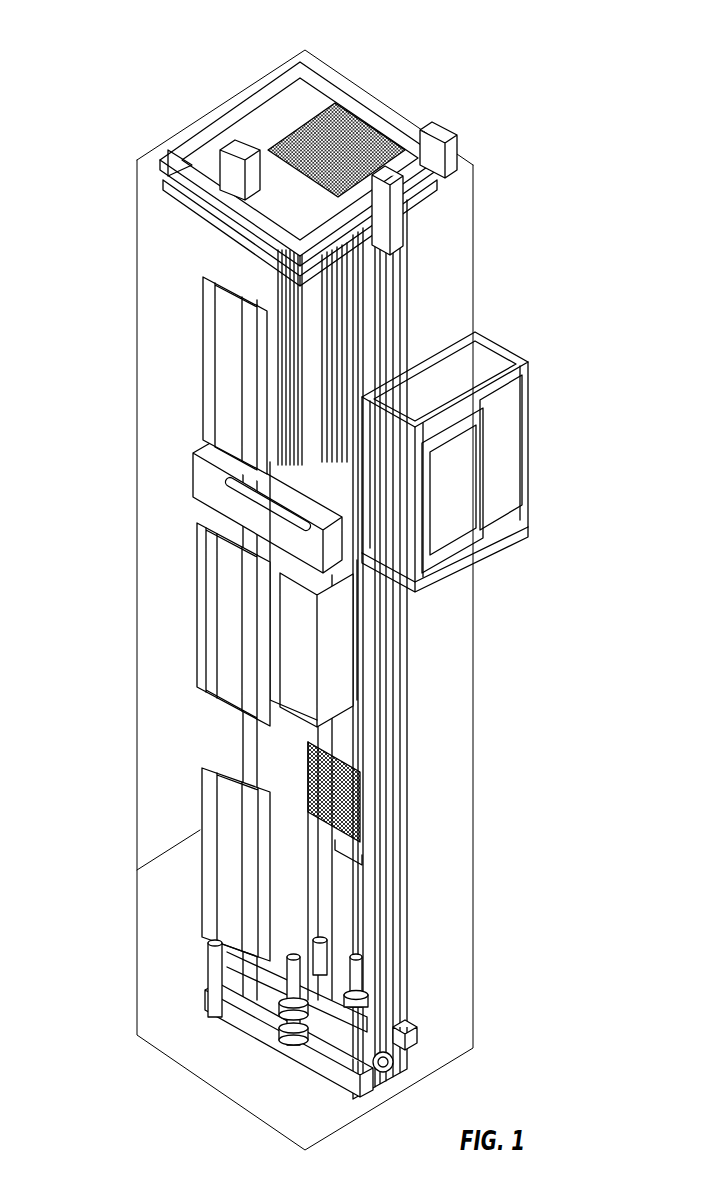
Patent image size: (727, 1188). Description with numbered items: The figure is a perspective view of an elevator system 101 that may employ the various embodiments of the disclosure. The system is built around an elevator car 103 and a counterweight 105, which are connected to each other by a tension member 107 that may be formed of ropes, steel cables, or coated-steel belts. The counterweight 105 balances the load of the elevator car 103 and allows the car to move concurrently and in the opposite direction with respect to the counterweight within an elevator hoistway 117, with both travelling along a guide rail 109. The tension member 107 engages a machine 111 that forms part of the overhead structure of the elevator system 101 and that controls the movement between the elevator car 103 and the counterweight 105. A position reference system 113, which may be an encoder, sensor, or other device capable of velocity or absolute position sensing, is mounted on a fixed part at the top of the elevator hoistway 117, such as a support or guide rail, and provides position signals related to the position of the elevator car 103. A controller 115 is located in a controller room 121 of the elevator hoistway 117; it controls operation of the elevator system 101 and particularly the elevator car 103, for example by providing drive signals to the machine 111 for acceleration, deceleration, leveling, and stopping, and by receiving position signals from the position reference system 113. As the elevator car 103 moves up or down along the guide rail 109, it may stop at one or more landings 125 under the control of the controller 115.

The elevator system 101 is at (332, 559).
The elevator car 103 is at (305, 640).
The counterweight 105 is at (355, 805).
The tension member 107 is at (302, 376).
The guide rail 109 is at (384, 742).
The machine 111 is at (232, 152).
The position reference system 113 is at (384, 240).
The controller 115 is at (478, 475).
The elevator hoistway 117 is at (184, 745).
The controller room 121 is at (487, 453).
The landings 125 is at (200, 366).